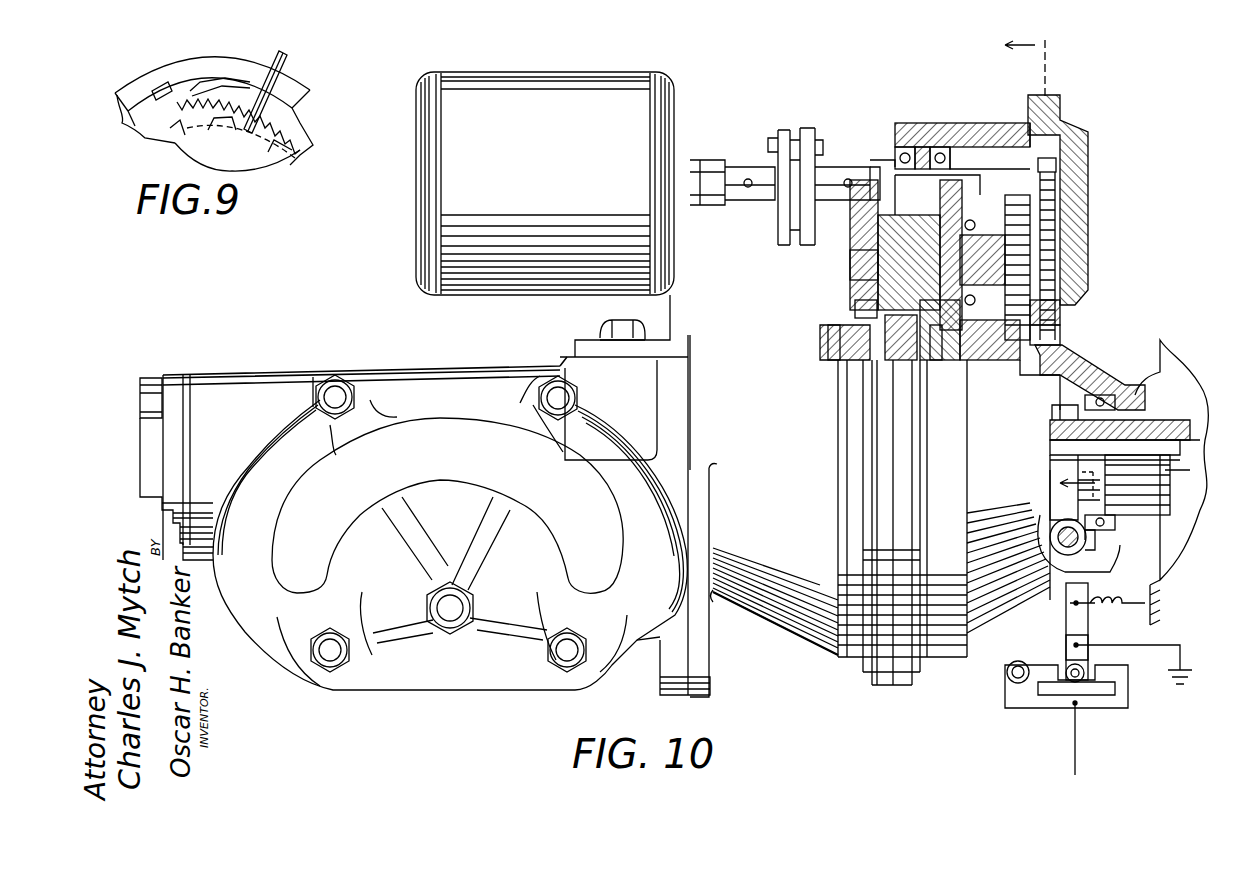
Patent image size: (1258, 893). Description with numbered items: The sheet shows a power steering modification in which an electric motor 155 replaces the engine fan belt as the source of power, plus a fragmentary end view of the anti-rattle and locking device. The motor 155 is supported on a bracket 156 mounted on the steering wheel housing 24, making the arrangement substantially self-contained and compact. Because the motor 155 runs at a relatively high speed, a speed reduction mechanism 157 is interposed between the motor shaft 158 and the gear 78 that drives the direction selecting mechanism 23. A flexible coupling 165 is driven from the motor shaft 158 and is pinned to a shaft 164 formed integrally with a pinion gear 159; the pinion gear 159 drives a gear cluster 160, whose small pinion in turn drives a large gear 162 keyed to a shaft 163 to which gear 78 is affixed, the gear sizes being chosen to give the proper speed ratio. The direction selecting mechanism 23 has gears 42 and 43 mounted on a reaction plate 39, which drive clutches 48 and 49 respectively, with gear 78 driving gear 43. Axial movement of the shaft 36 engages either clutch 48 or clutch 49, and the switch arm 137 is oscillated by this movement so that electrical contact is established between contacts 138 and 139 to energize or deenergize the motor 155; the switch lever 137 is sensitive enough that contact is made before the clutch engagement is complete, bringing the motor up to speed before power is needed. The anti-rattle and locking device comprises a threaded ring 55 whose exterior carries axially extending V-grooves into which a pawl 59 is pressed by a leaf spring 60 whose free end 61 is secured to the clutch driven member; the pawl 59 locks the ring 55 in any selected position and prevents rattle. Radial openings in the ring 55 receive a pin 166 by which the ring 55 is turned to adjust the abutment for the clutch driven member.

In FIG. 9, the threaded ring 55 is at (292, 133).
In FIG. 9, the pawl 59 is at (260, 70).
In FIG. 9, the leaf spring 60 is at (196, 84).
In FIG. 9, the free end 61 is at (158, 92).
In FIG. 9, the pin 166 is at (285, 65).
In FIG. 10, the electric motor 155 is at (620, 73).
In FIG. 10, the bracket 156 is at (698, 290).
In FIG. 10, the motor shaft 158 is at (715, 168).
In FIG. 10, the flexible coupling 165 is at (810, 130).
In FIG. 10, the shaft 164 is at (985, 135).
In FIG. 10, the speed reduction mechanism 157 is at (1080, 132).
In FIG. 10, the pinion gear 159 is at (1060, 158).
In FIG. 10, the gear cluster 160 is at (1050, 218).
In FIG. 10, the shaft 163 is at (1040, 248).
In FIG. 10, the large gear 162 is at (1000, 262).
In FIG. 10, the gear 78 is at (880, 235).
In FIG. 10, the gear 42 is at (845, 300).
In FIG. 10, the clutch 48 is at (830, 318).
In FIG. 10, the reaction plate 39 is at (950, 330).
In FIG. 10, the gear 43 is at (1060, 310).
In FIG. 10, the clutch 49 is at (1065, 330).
In FIG. 10, the direction selecting mechanism 23 is at (1130, 370).
In FIG. 10, the shaft 36 is at (1180, 420).
In FIG. 10, the steering wheel housing 24 is at (243, 384).
In FIG. 10, the switch arm 137 is at (1085, 590).
In FIG. 10, the contact 138 is at (1068, 658).
In FIG. 10, the contact 139 is at (1120, 710).